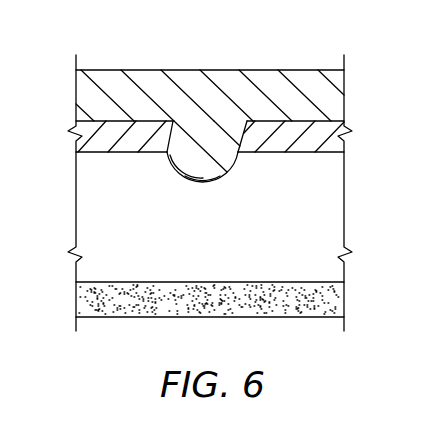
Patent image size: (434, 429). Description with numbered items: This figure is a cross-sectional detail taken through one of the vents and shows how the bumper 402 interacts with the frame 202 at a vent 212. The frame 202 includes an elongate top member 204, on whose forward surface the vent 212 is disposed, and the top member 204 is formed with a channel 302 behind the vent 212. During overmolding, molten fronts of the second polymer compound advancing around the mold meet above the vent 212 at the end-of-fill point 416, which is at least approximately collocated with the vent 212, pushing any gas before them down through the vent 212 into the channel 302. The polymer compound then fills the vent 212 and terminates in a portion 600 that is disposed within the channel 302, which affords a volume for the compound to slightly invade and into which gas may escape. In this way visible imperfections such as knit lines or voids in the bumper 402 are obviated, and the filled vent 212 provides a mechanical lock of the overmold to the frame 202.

The frame 202 is at (123, 272).
The top member 204 is at (82, 180).
The vent 212 is at (216, 92).
The channel 302 is at (322, 206).
The bumper 402 is at (328, 92).
The end-of-fill point 416 is at (198, 186).
The portion 600 is at (210, 176).